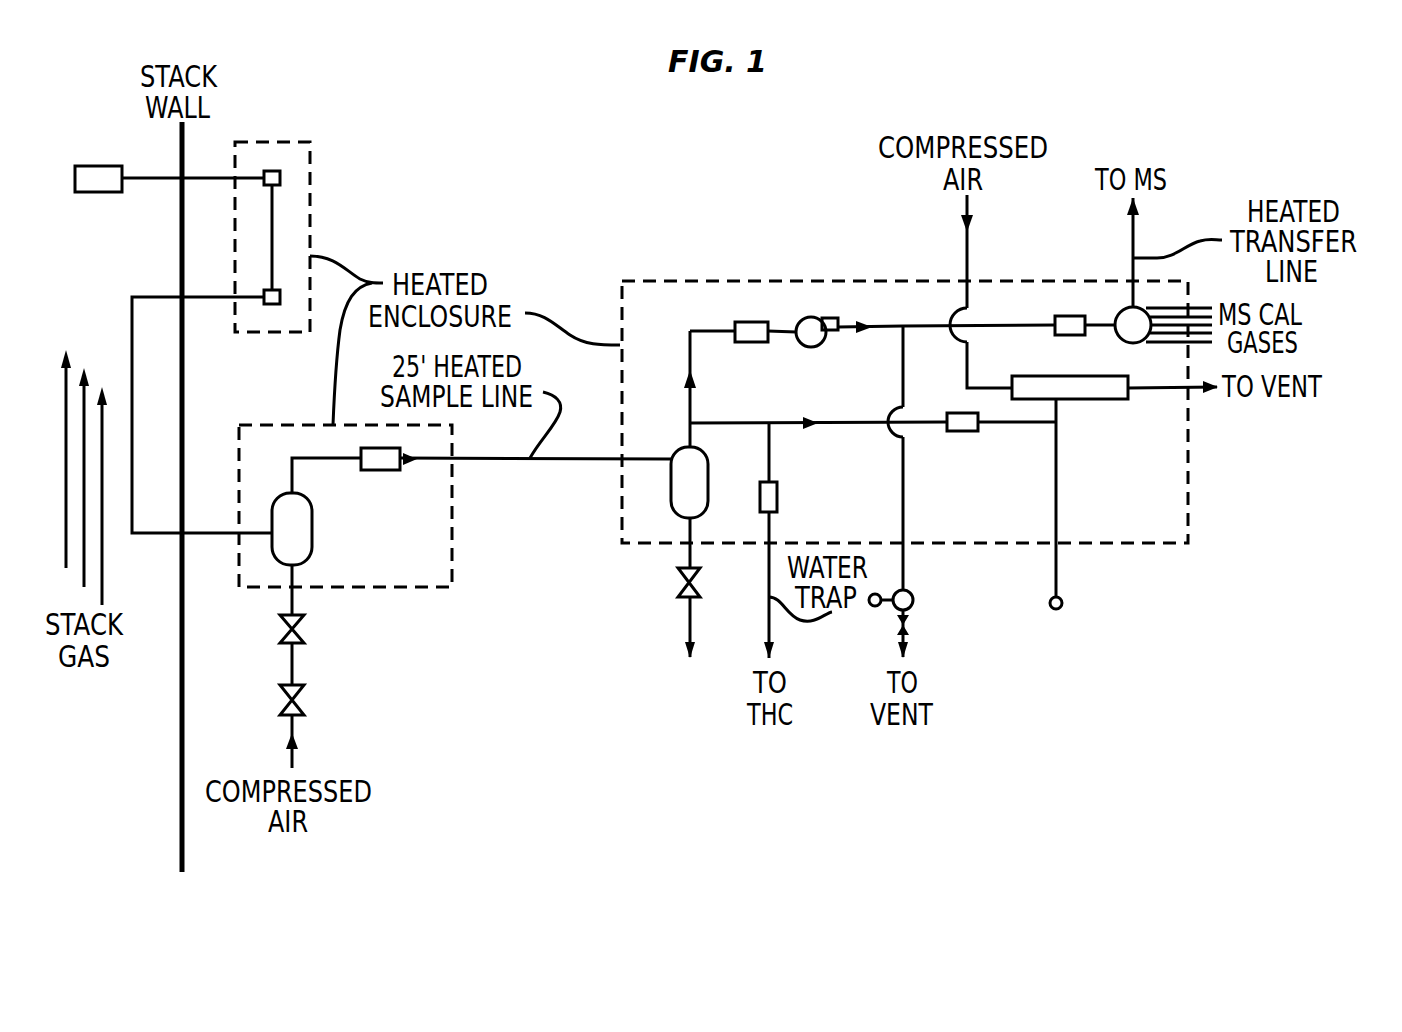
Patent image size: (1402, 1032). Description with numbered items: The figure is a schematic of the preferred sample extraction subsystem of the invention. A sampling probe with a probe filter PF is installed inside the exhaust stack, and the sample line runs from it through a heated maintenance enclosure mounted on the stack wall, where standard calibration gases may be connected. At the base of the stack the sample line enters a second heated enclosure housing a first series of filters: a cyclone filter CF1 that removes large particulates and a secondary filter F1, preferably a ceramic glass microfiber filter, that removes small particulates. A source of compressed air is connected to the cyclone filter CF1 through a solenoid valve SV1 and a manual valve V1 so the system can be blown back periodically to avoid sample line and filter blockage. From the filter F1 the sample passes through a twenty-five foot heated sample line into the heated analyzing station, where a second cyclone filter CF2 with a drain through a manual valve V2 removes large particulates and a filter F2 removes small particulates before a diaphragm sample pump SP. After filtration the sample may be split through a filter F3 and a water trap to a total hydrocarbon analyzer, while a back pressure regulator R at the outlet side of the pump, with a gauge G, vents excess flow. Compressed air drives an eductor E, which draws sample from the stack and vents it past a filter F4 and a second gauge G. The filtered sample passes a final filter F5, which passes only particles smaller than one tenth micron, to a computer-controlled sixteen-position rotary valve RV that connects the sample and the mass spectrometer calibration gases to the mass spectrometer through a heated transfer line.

The probe filter PF is at (169, 197).
The cyclone filter CF1 is at (313, 529).
The filter F1 is at (380, 477).
The manual valve V1 is at (305, 629).
The solenoid valve SV1 is at (313, 701).
The cyclone filter CF2 is at (713, 482).
The filter F2 is at (751, 317).
The sample pump SP is at (817, 316).
The filter F3 is at (782, 502).
The manual valve V2 is at (673, 582).
The filter F4 is at (962, 441).
The filter F5 is at (1070, 310).
The rotary valve RV is at (1125, 341).
The eductor E is at (1070, 405).
The back pressure regulator R is at (911, 492).
The gauge G is at (963, 619).